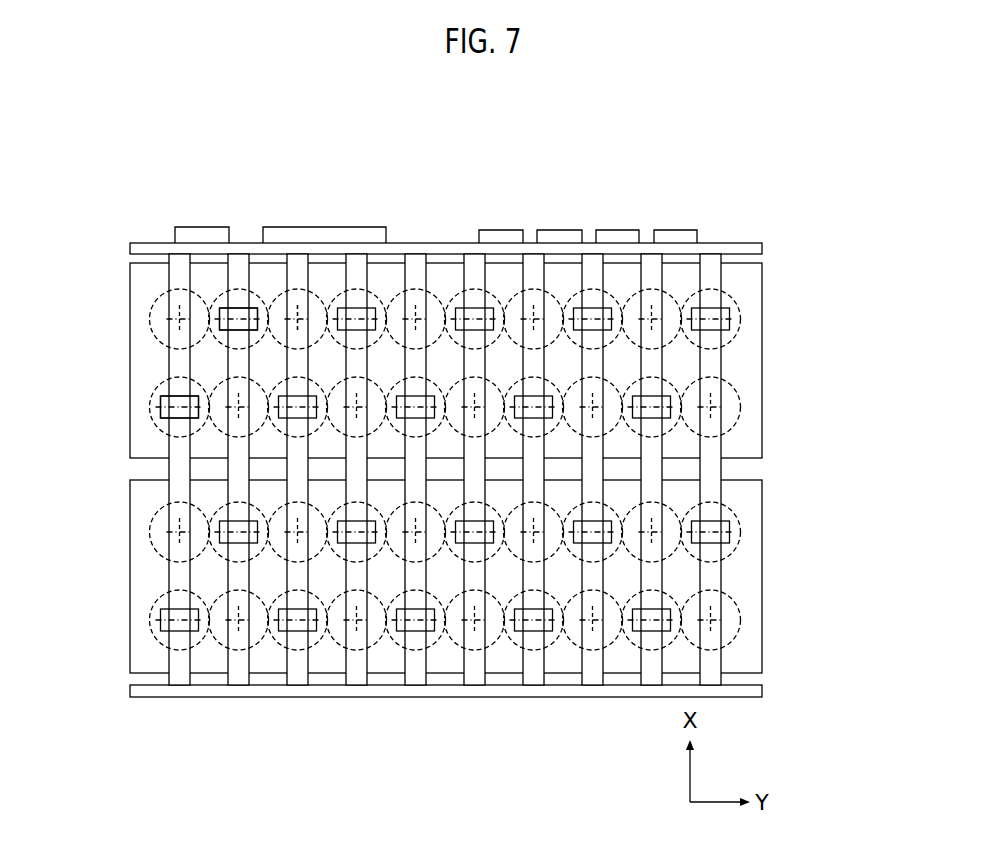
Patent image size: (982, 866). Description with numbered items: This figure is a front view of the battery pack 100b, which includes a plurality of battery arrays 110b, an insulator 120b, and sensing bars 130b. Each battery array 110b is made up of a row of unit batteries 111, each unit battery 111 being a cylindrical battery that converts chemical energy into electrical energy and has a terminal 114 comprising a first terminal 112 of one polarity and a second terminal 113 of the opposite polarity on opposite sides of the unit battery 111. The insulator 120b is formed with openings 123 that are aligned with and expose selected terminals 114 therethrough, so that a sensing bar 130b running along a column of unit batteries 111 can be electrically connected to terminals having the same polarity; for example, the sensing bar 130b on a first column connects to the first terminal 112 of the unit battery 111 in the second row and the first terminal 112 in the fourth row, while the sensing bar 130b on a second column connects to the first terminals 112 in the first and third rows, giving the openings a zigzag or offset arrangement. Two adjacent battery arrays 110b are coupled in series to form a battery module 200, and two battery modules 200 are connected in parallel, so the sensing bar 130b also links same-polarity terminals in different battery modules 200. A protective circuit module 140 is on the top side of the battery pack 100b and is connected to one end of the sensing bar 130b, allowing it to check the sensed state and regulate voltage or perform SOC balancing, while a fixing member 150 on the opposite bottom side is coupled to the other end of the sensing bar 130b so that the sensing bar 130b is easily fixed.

The battery pack 100b is at (56, 160).
The battery array 110b is at (122, 300).
The unit battery 111 is at (451, 276).
The first terminal 112 is at (258, 285).
The second terminal 113 is at (277, 292).
The terminal 114 is at (225, 173).
The insulator 120b is at (142, 390).
The opening 123 is at (163, 405).
The sensing bar 130b is at (735, 467).
The protective circuit module 140 is at (770, 247).
The fixing member 150 is at (772, 693).
The battery module 200 is at (771, 267).